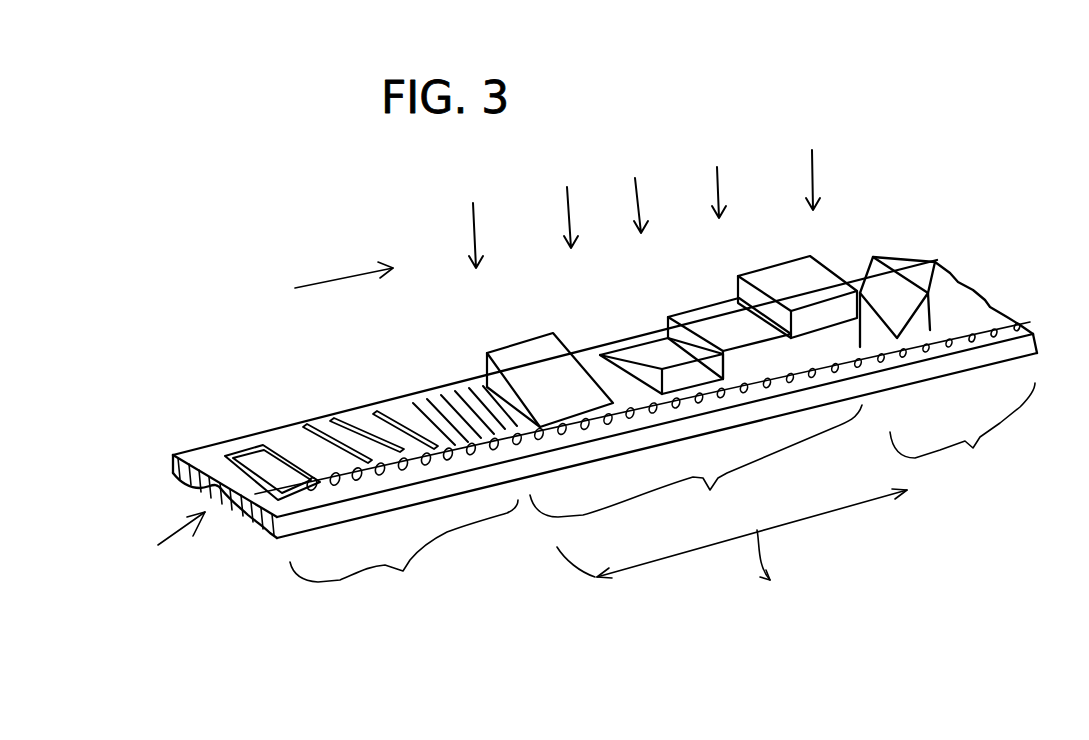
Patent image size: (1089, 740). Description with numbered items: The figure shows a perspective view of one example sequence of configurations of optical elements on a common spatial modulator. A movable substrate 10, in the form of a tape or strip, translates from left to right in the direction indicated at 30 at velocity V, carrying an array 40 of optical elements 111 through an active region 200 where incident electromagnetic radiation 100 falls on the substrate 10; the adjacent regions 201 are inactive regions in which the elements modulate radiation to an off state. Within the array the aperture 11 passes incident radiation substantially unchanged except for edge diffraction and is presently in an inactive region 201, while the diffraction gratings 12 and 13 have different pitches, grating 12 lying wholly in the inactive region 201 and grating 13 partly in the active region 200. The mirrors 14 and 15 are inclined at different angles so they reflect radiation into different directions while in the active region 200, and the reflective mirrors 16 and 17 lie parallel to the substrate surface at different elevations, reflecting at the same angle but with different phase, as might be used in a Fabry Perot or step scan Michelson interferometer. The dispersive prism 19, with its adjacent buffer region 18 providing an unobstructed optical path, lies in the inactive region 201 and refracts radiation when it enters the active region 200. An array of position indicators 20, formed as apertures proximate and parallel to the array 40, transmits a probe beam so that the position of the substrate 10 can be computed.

The movable substrate 10 is at (205, 455).
The aperture 11 is at (250, 457).
The diffraction grating 12 is at (347, 430).
The diffraction grating 13 is at (435, 398).
The inclined mirror 14 is at (523, 347).
The inclined mirror 15 is at (643, 355).
The reflective mirror parallel to substrate surface 16 is at (712, 320).
The reflective mirror parallel to substrate surface 17 is at (788, 272).
The buffer region 18 is at (880, 338).
The dispersive prism 19 is at (874, 257).
The array of position indicators 20 is at (950, 328).
The direction of translation 30 is at (350, 272).
The array of optical elements 40 is at (169, 546).
The incident electromagnetic radiation 100 is at (722, 200).
The optical elements 111 is at (905, 250).
The active region 200 is at (718, 499).
The inactive regions 201 is at (662, 500).